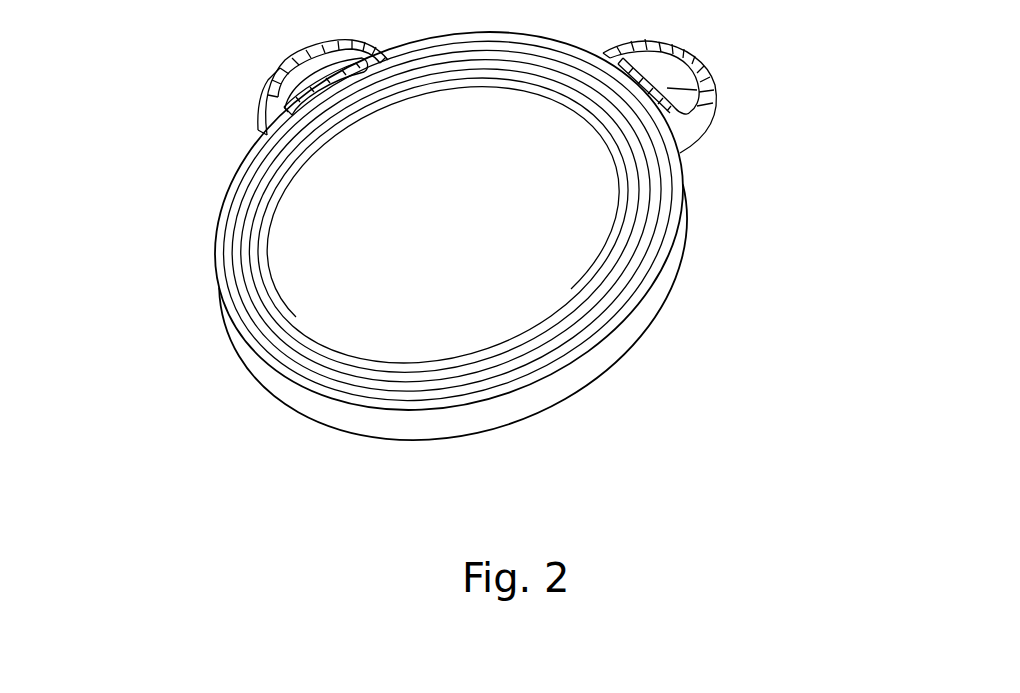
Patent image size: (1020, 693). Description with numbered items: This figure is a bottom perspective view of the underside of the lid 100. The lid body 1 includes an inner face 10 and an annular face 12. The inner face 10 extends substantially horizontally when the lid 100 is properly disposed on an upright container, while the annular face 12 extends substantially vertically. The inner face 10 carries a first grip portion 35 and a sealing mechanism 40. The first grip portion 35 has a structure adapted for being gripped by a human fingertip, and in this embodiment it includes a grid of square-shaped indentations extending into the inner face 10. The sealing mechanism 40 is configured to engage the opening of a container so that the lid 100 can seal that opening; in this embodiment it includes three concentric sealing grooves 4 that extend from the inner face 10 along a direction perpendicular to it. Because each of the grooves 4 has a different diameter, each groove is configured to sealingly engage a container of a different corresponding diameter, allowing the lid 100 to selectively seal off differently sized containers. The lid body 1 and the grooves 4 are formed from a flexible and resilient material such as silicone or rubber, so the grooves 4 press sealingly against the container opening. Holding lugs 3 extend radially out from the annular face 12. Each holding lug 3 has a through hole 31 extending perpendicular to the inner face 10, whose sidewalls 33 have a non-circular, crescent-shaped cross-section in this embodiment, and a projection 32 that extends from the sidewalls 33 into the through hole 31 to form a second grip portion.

The lid 100 is at (216, 165).
The lid body 1 is at (592, 357).
The holding lug 3 is at (272, 97).
The sealing grooves 4 is at (600, 277).
The inner face 10 is at (320, 305).
The annular face 12 is at (330, 412).
The through hole 31 is at (320, 80).
The projection 32 is at (697, 90).
The sidewalls 33 is at (335, 67).
The first grip portion 35 is at (372, 40).
The sealing mechanism 40 is at (233, 247).